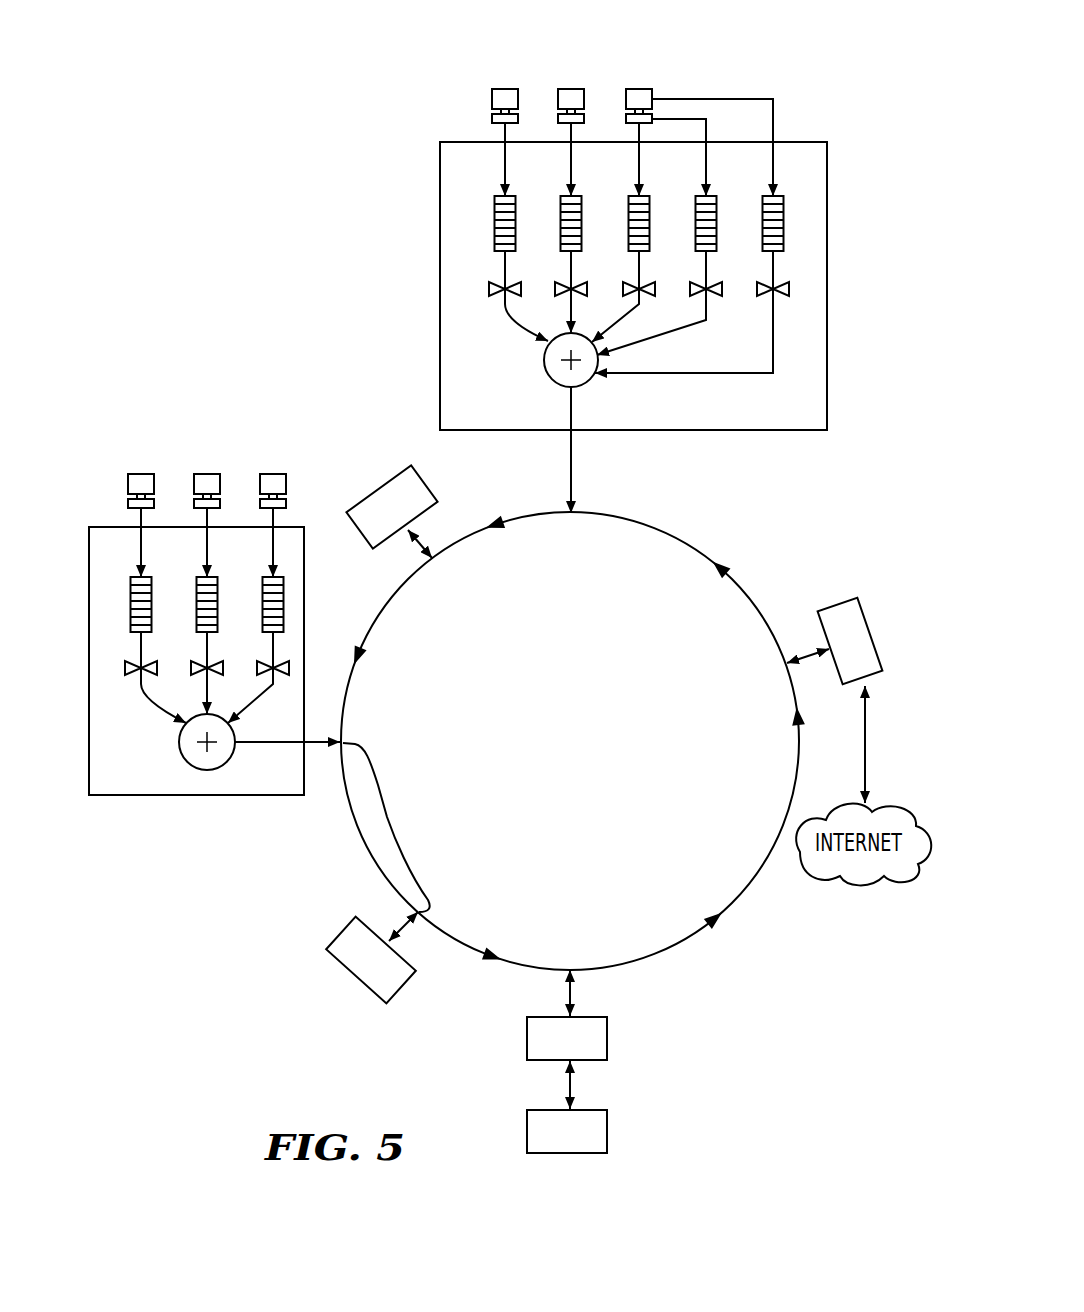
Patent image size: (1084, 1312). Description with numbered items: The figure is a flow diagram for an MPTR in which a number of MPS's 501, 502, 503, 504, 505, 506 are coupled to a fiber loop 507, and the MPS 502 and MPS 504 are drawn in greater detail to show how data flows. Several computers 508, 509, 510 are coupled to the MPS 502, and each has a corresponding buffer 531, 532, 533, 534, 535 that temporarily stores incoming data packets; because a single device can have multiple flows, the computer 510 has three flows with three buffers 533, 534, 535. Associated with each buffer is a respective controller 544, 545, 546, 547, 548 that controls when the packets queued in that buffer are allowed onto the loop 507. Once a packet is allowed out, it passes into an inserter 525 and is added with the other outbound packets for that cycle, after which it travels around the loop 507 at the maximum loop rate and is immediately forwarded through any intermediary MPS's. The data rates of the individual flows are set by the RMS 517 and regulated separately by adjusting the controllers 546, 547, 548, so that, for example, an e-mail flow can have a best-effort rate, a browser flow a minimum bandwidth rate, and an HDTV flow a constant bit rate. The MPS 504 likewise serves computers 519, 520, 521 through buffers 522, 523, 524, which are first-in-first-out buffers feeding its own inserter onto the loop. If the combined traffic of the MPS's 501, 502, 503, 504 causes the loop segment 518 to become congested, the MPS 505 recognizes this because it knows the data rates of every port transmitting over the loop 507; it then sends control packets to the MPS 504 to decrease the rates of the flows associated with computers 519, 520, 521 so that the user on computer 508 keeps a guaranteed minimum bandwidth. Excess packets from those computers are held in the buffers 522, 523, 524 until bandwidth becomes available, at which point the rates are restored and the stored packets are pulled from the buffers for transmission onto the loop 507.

The MPS 501 is at (862, 606).
The MPS 502 is at (827, 395).
The MPS 503 is at (425, 482).
The MPS 504 is at (304, 576).
The MPS 505 is at (405, 988).
The MPS 506 is at (607, 1037).
The fiber loop 507 is at (747, 594).
The computer 508 is at (506, 89).
The computer 509 is at (572, 89).
The computer 510 is at (640, 89).
The RMS 517 is at (607, 1130).
The loop segment 518 is at (388, 820).
The computer 519 is at (141, 474).
The computer 520 is at (207, 474).
The computer 521 is at (273, 474).
The buffer 522 is at (131, 600).
The buffer 523 is at (197, 600).
The buffer 524 is at (263, 600).
The inserter 525 is at (592, 379).
The buffer 531 is at (495, 202).
The buffer 532 is at (561, 202).
The buffer 533 is at (629, 202).
The buffer 534 is at (696, 202).
The buffer 535 is at (763, 202).
The controller 544 is at (489, 284).
The controller 545 is at (555, 284).
The controller 546 is at (623, 284).
The controller 547 is at (690, 284).
The controller 548 is at (757, 284).